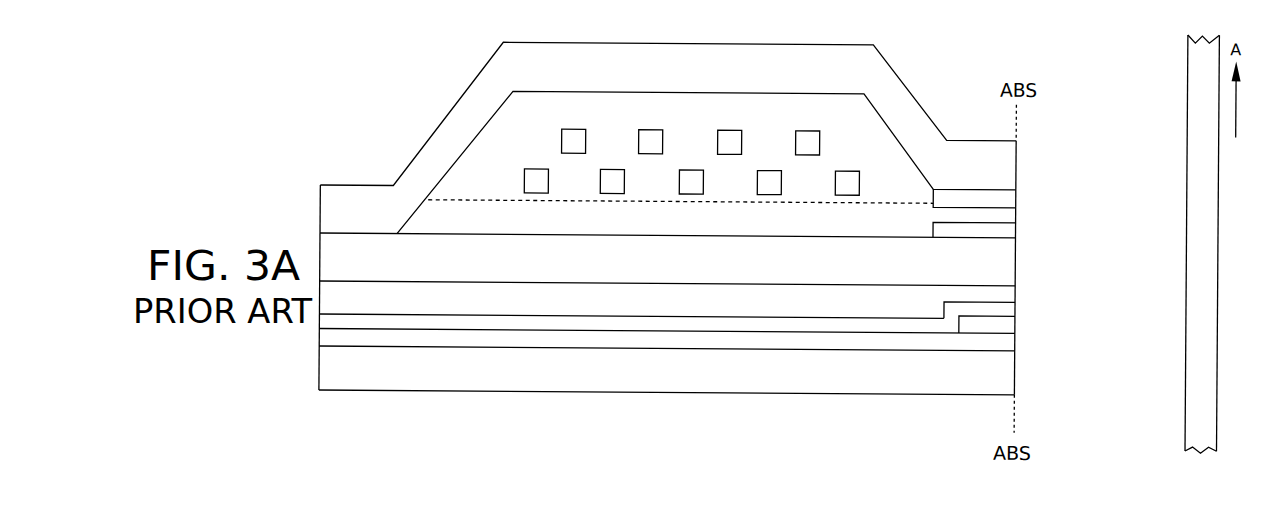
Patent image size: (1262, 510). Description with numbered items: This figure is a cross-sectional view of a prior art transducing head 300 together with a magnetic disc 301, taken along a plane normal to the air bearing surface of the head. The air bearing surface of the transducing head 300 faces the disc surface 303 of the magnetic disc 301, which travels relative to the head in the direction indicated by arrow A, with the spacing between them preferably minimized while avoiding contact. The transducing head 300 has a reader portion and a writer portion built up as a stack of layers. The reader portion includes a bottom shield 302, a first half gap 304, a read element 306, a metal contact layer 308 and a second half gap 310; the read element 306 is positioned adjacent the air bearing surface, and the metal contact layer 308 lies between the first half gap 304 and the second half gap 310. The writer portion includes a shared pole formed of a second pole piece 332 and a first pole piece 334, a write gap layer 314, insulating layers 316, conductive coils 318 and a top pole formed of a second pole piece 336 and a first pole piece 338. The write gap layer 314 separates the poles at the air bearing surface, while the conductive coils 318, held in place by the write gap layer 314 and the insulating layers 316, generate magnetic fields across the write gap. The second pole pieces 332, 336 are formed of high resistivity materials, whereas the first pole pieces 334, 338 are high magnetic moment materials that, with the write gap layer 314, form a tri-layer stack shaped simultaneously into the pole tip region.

The transducing head 300 is at (393, 101).
The magnetic disc 301 is at (1199, 104).
The bottom shield 302 is at (1004, 378).
The disc surface 303 is at (1187, 185).
The first half gap 304 is at (993, 342).
The read element 306 is at (995, 322).
The metal contact layer 308 is at (990, 306).
The second half gap 310 is at (932, 307).
The write gap layer 314 is at (1003, 210).
The insulating layers 316 is at (911, 186).
The conductive coils 318 is at (769, 184).
The second pole piece 332 is at (1004, 276).
The first pole piece 334 is at (990, 228).
The second pole piece 336 is at (1005, 170).
The first pole piece 338 is at (990, 196).